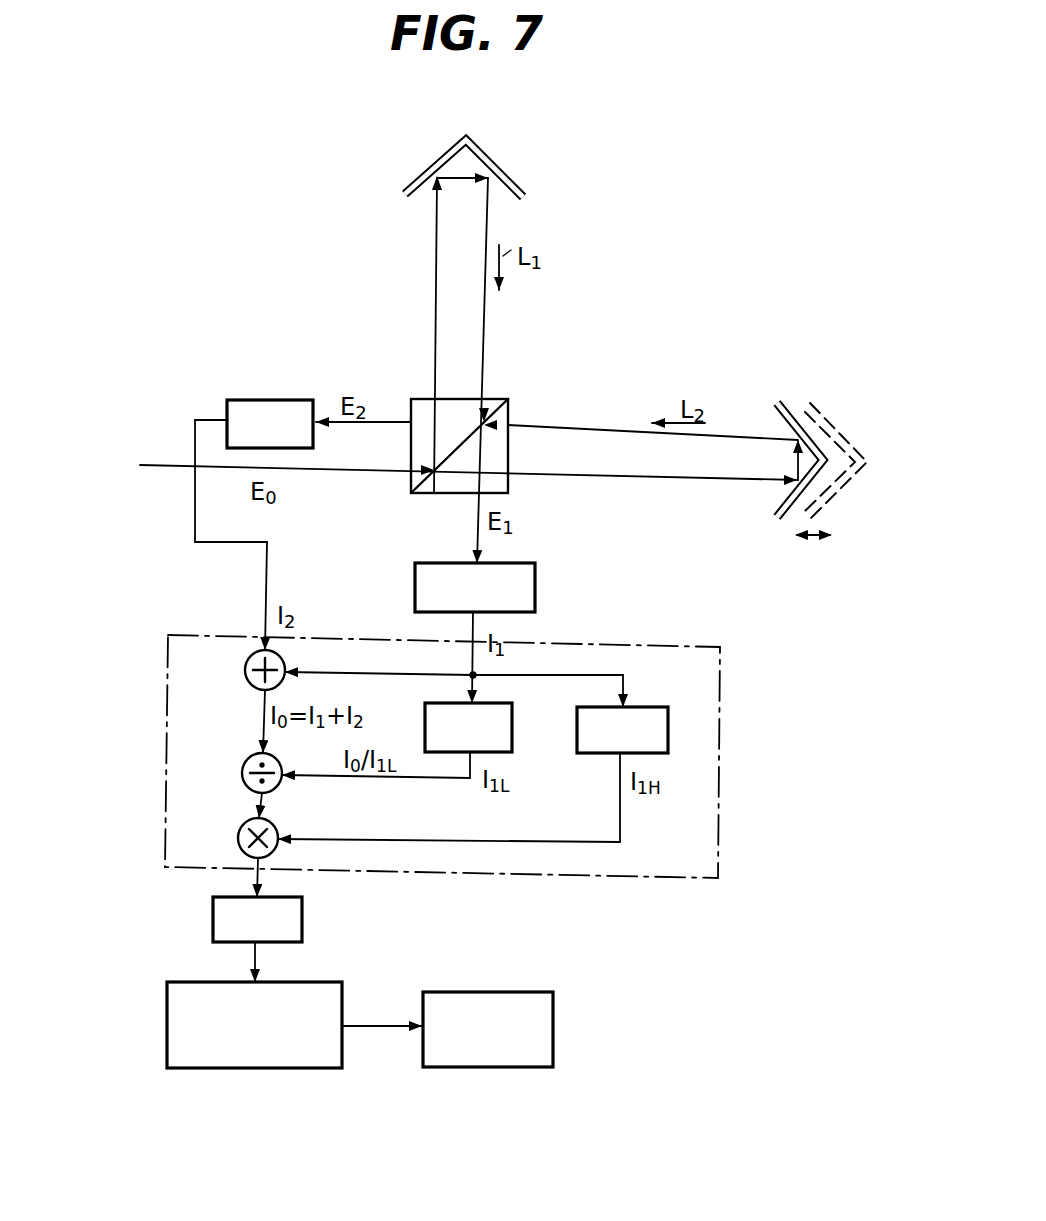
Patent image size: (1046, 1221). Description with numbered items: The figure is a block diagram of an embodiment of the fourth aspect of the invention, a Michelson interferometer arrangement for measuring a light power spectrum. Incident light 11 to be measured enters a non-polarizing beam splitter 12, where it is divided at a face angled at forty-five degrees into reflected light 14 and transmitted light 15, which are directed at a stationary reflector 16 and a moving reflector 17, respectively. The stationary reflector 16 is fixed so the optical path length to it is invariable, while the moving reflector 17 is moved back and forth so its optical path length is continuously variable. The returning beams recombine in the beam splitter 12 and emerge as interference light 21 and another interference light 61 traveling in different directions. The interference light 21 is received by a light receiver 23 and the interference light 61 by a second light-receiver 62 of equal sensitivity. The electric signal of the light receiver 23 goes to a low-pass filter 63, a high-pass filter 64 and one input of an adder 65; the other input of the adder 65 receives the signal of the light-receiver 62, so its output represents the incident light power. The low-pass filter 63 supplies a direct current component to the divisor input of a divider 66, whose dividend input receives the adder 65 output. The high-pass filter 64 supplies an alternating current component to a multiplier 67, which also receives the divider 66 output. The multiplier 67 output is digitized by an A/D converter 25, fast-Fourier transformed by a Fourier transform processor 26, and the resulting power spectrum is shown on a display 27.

The incident light 11 is at (158, 468).
The non-polarizing beam splitter 12 is at (511, 413).
The reflected light 14 is at (436, 264).
The transmitted light 15 is at (572, 477).
The stationary reflector 16 is at (502, 176).
The moving reflector 17 is at (776, 512).
The interference light 21 is at (480, 516).
The light receiver 23 is at (538, 584).
The A/D converter 25 is at (305, 912).
The Fourier transform processor 26 is at (345, 990).
The display 27 is at (557, 1005).
The interference light 61 is at (388, 420).
The light-receiver 62 is at (281, 400).
The low-pass filter 63 is at (515, 733).
The high-pass filter 64 is at (670, 737).
The adder 65 is at (249, 665).
The divider 66 is at (242, 773).
The multiplier 67 is at (290, 808).